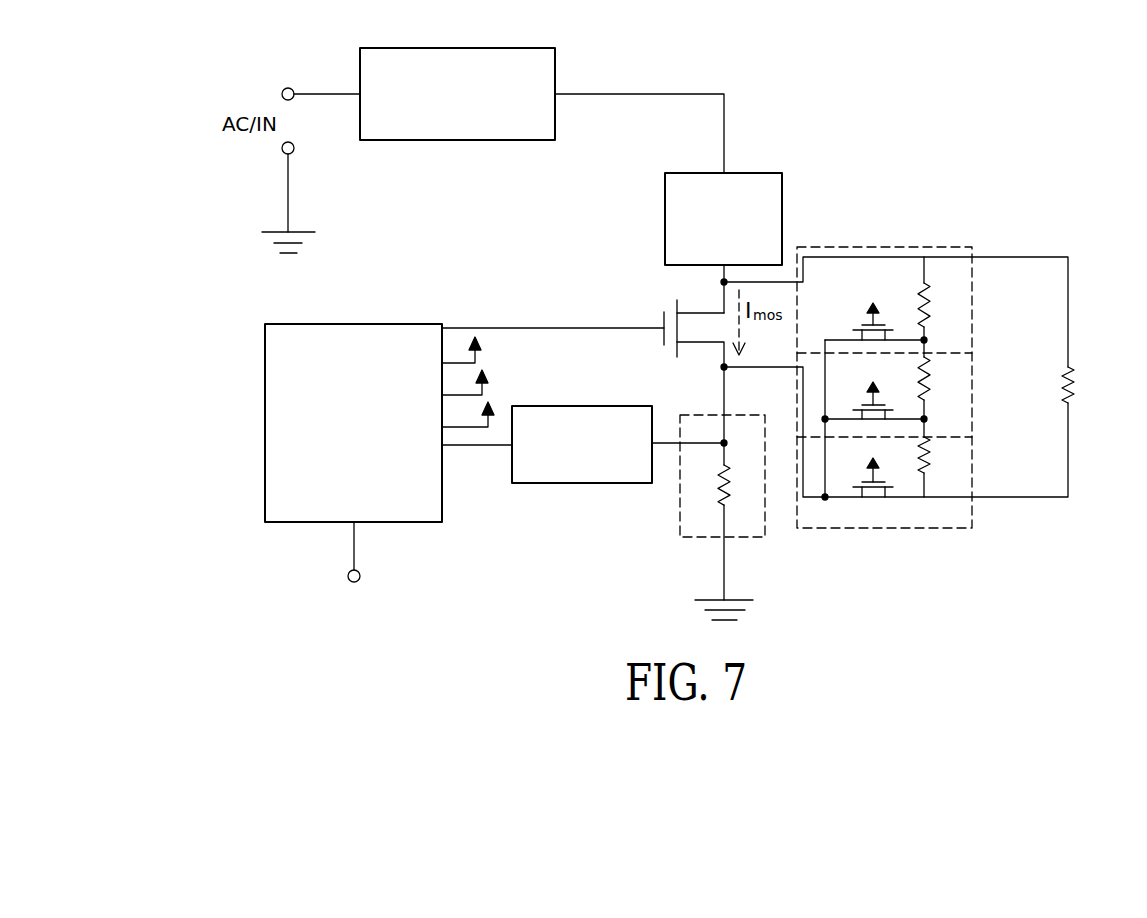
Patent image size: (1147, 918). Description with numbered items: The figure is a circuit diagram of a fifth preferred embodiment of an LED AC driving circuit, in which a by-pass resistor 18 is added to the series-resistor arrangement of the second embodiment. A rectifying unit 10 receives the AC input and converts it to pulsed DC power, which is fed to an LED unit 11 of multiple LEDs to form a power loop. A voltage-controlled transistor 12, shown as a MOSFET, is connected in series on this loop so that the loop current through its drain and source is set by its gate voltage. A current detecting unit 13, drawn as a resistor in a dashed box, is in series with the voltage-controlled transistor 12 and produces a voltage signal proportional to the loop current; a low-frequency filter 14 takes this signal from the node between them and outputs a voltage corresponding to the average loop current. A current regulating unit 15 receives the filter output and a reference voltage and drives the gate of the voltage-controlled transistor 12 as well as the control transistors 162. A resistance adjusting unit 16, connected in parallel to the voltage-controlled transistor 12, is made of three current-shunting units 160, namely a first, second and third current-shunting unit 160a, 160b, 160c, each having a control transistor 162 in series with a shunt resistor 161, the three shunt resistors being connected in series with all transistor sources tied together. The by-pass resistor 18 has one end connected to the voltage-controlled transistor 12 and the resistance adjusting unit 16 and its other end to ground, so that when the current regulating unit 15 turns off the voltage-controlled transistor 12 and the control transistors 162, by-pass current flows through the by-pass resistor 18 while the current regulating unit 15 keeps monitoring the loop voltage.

The rectifying unit 10 is at (445, 47).
The LED unit 11 is at (773, 173).
The voltage-controlled transistor 12 is at (686, 312).
The current detecting unit 13 is at (680, 512).
The low-frequency filter 14 is at (578, 483).
The current regulating unit 15 is at (265, 470).
The resistance adjusting unit 16 is at (853, 240).
The by-pass resistor 18 is at (1068, 365).
The current-shunting unit 160 is at (851, 510).
The first current-shunting unit 160a is at (933, 252).
The second current-shunting unit 160b is at (955, 410).
The third current-shunting unit 160c is at (962, 516).
The shunt resistor 161 is at (924, 473).
The control transistor 162 is at (873, 497).